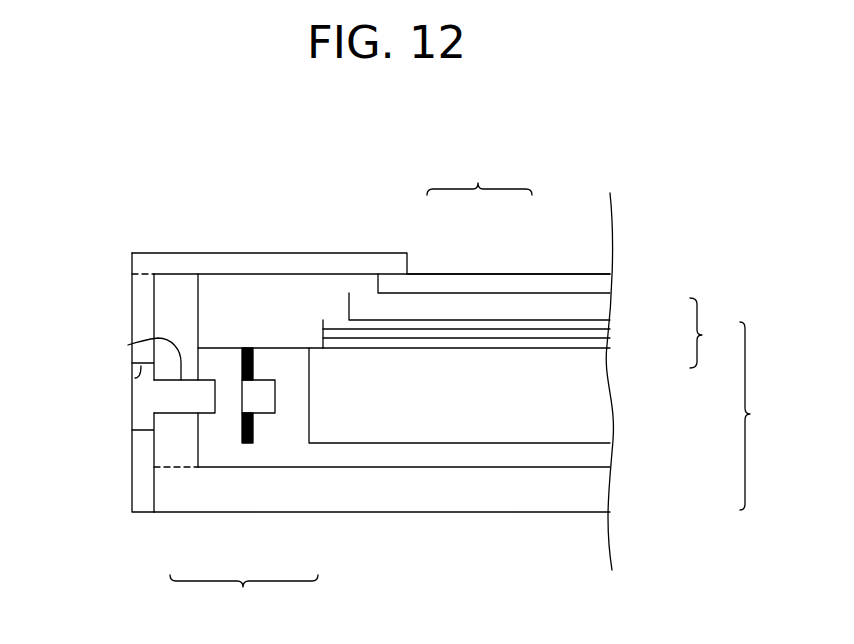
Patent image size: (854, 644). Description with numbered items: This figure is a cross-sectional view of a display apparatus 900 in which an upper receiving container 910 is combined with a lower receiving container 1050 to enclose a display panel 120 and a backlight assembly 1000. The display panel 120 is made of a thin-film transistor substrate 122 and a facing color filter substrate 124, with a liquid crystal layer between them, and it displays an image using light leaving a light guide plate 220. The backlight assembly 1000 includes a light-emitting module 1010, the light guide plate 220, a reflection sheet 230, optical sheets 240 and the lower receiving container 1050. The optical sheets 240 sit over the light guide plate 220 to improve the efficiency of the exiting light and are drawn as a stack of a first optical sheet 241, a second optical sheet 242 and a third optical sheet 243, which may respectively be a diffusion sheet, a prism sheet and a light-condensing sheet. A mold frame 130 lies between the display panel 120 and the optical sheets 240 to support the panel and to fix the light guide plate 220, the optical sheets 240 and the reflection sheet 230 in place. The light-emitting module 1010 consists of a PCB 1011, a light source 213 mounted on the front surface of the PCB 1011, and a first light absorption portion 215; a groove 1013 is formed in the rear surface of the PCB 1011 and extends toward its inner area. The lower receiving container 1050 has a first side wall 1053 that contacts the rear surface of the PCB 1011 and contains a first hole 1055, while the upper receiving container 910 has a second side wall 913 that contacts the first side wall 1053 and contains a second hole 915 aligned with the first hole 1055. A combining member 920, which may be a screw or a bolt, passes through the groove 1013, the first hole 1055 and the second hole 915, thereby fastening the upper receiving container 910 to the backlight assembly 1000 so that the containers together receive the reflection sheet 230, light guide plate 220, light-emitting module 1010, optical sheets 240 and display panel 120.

The display apparatus 900 is at (583, 183).
The upper receiving container 910 is at (209, 256).
The second side wall 913 is at (137, 313).
The second hole 915 is at (135, 378).
The combining member 920 is at (137, 398).
The groove 1013 is at (208, 379).
The PCB 1011 is at (221, 433).
The light-emitting module 1010 is at (244, 595).
The first side wall 1053 is at (163, 447).
The first hole 1055 is at (128, 345).
The lower receiving container 1050 is at (603, 487).
The mold frame 130 is at (287, 291).
The display panel 120 is at (479, 175).
The color filter substrate 124 is at (445, 275).
The thin-film transistor substrate 122 is at (512, 296).
The optical sheets 240 is at (715, 333).
The third optical sheet 243 is at (608, 323).
The second optical sheet 242 is at (608, 333).
The first optical sheet 241 is at (607, 343).
The light guide plate 220 is at (603, 397).
The reflection sheet 230 is at (603, 452).
The first light absorption portion 215 is at (247, 445).
The light source 213 is at (263, 404).
The backlight assembly 1000 is at (772, 416).